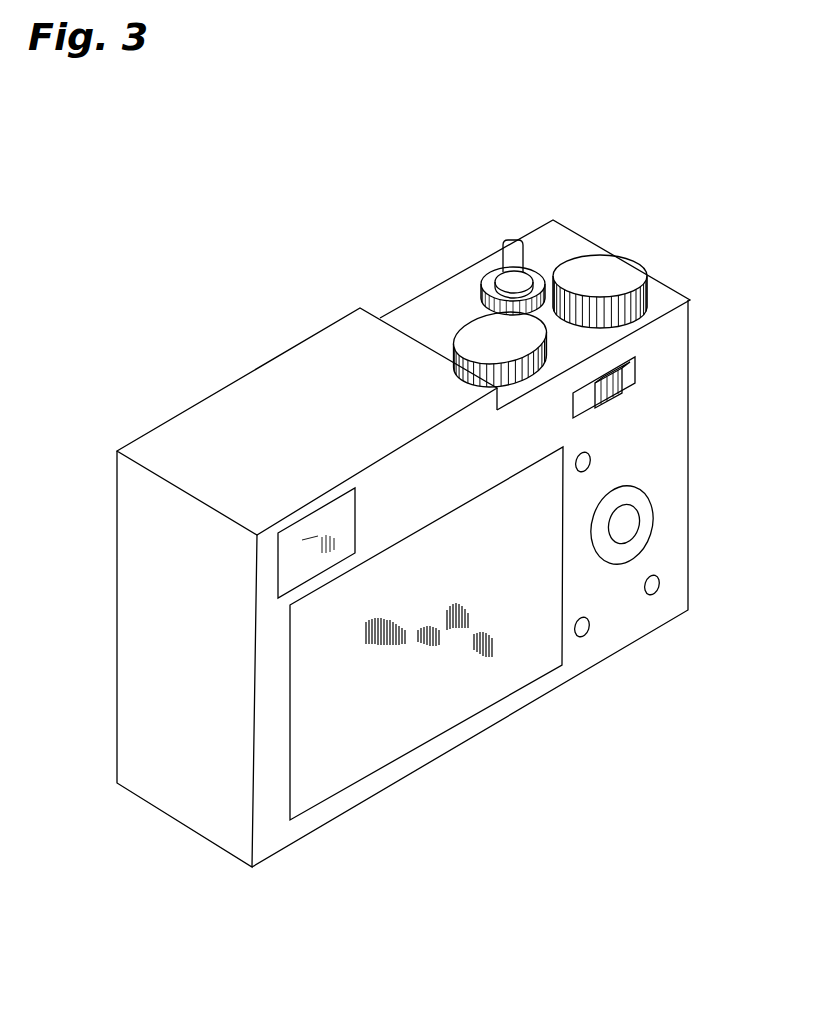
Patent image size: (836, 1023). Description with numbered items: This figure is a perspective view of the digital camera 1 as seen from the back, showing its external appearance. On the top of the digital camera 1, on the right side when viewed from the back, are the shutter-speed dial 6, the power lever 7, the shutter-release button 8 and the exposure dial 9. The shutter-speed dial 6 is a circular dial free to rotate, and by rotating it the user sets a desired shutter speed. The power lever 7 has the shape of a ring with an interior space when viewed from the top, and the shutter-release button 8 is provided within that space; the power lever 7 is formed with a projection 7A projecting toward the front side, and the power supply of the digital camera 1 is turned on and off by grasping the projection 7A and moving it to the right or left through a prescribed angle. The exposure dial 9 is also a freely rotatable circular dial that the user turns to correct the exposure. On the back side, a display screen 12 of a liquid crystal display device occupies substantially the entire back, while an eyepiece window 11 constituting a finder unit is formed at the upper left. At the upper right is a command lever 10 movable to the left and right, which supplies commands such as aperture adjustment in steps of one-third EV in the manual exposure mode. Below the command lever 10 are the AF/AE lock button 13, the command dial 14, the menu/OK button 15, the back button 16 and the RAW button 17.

The digital camera 1 is at (675, 168).
The shutter-speed dial 6 is at (486, 323).
The power lever 7 is at (490, 282).
The projection 7A is at (511, 240).
The shutter-release button 8 is at (522, 278).
The exposure dial 9 is at (639, 277).
The command lever 10 is at (622, 372).
The eyepiece window 11 is at (343, 530).
The display screen 12 is at (436, 698).
The AF/AE lock button 13 is at (590, 456).
The command dial 14 is at (646, 505).
The menu/OK button 15 is at (626, 528).
The back button 16 is at (586, 633).
The RAW button 17 is at (655, 592).